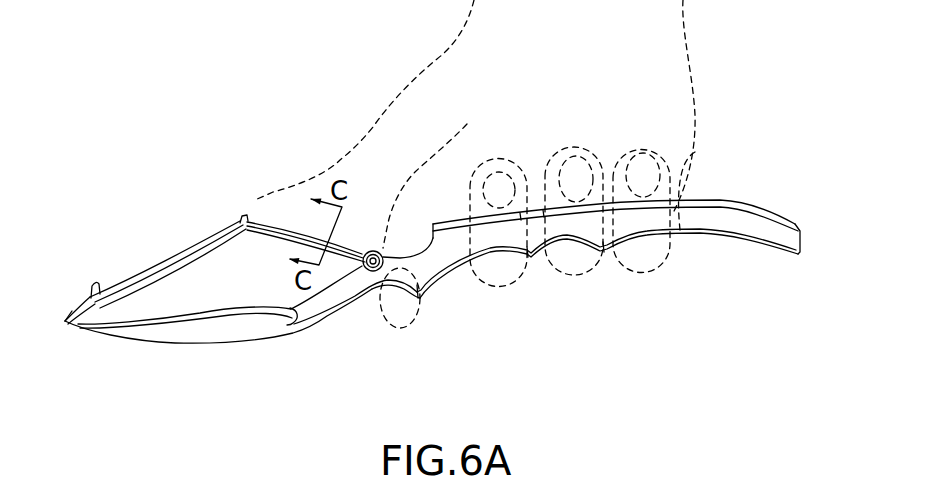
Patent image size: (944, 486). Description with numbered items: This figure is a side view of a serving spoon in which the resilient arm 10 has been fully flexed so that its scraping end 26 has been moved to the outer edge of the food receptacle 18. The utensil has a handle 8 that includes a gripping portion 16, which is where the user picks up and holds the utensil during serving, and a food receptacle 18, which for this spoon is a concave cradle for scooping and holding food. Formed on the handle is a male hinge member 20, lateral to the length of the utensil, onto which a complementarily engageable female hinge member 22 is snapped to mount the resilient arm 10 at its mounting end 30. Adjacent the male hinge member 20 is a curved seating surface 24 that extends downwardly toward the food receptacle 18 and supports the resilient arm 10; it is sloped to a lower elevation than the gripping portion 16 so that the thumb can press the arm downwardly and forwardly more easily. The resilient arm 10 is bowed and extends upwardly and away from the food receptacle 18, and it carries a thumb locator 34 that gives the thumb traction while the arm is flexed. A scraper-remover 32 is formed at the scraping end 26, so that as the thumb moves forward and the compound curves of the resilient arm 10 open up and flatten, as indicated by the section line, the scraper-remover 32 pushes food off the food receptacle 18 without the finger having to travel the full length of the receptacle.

The handle 8 is at (688, 262).
The resilient arm 10 is at (215, 198).
The gripping portion 16 is at (451, 252).
The food receptacle 18 is at (165, 342).
The male hinge member 20 is at (372, 275).
The female hinge member 22 is at (390, 256).
The curved seating surface 24 is at (422, 247).
The scraping end 26 is at (101, 284).
The mounting end 30 is at (372, 250).
The scraper-remover 32 is at (90, 300).
The thumb locator 34 is at (247, 218).